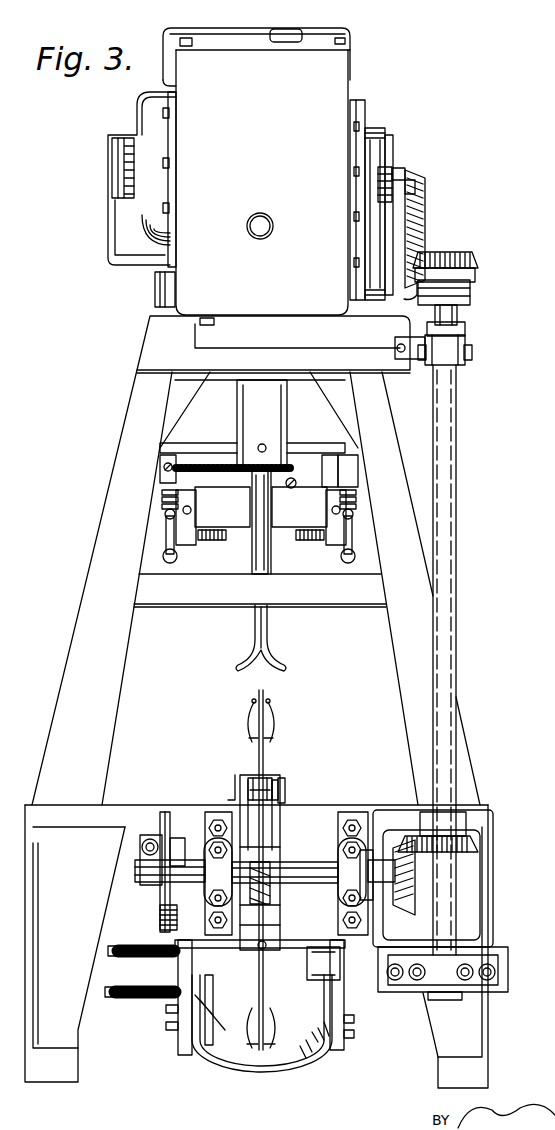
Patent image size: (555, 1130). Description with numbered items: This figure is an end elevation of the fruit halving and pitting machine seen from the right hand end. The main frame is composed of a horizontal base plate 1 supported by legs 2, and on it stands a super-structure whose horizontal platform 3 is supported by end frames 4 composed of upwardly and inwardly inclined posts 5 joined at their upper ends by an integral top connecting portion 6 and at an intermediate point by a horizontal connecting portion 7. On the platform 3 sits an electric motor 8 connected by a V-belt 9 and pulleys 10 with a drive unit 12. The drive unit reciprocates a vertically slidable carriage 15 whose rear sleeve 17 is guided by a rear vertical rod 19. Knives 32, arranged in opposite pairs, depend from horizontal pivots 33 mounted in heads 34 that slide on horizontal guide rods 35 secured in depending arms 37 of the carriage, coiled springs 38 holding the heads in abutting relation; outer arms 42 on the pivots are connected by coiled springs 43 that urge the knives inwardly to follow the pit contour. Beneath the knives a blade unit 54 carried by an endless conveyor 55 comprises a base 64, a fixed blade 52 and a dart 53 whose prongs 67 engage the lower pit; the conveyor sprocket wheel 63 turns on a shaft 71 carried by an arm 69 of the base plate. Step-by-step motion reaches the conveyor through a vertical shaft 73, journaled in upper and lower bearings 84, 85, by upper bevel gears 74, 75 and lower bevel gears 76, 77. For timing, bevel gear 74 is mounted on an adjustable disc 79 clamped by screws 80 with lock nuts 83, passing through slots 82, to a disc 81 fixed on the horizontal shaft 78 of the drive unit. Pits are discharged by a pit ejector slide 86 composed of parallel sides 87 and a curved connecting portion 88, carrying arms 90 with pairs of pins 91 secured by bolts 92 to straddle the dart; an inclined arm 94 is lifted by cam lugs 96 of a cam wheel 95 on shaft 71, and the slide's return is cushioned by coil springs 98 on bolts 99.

The base plate 1 is at (125, 805).
The legs 2 is at (32, 1080).
The platform 3 is at (155, 290).
The end frames 4 is at (77, 606).
The posts 5 is at (72, 641).
The top connecting portion 6 is at (148, 350).
The horizontal connecting portion 7 is at (348, 607).
The electric motor 8 is at (137, 103).
The V-belt 9 is at (376, 128).
The pulley 10 is at (400, 126).
The drive unit 12 is at (350, 66).
The carriage 15 is at (160, 452).
The rear sleeve 17 is at (237, 418).
The rear vertical rod 19 is at (252, 563).
The knives 32 is at (268, 645).
The horizontal pivots 33 is at (162, 500).
The heads 34 is at (274, 545).
The guide rods 35 is at (342, 470).
The depending arms 37 is at (160, 483).
The coiled springs 38 is at (200, 445).
The arms 42 is at (166, 533).
The coiled springs 43 is at (163, 556).
The fixed blade 52 is at (264, 757).
The dart 53 is at (274, 722).
The blade unit 54 is at (250, 778).
The endless conveyor 55 is at (283, 792).
The sprocket wheel 63 is at (286, 800).
The base 64 is at (268, 800).
The prongs 67 is at (252, 706).
The arm 69 is at (230, 795).
The shaft 71 is at (138, 880).
The vertical shaft 73 is at (457, 628).
The upper bevel gear 74 is at (422, 241).
The upper bevel gear 75 is at (470, 258).
The lower bevel gear 76 is at (450, 856).
The lower bevel gear 77 is at (410, 845).
The horizontal shaft 78 is at (350, 236).
The adjustable disc 79 is at (412, 297).
The clamping screws 80 is at (415, 186).
The disc 81 is at (392, 168).
The slots 82 is at (405, 170).
The lock nuts 83 is at (426, 198).
The upper bearing 84 is at (466, 362).
The lower bearing 85 is at (425, 993).
The pit ejector slide 86 is at (326, 1068).
The sides 87 is at (195, 1005).
The curved connecting portion 88 is at (281, 1073).
The arms 90 is at (185, 1056).
The pins 91 is at (305, 965).
The bolts 92 is at (168, 1024).
The arm 94 is at (205, 988).
The cam wheel 95 is at (163, 812).
The cam lugs 96 is at (180, 838).
The coil springs 98 is at (159, 961).
The bolts 99 is at (116, 987).